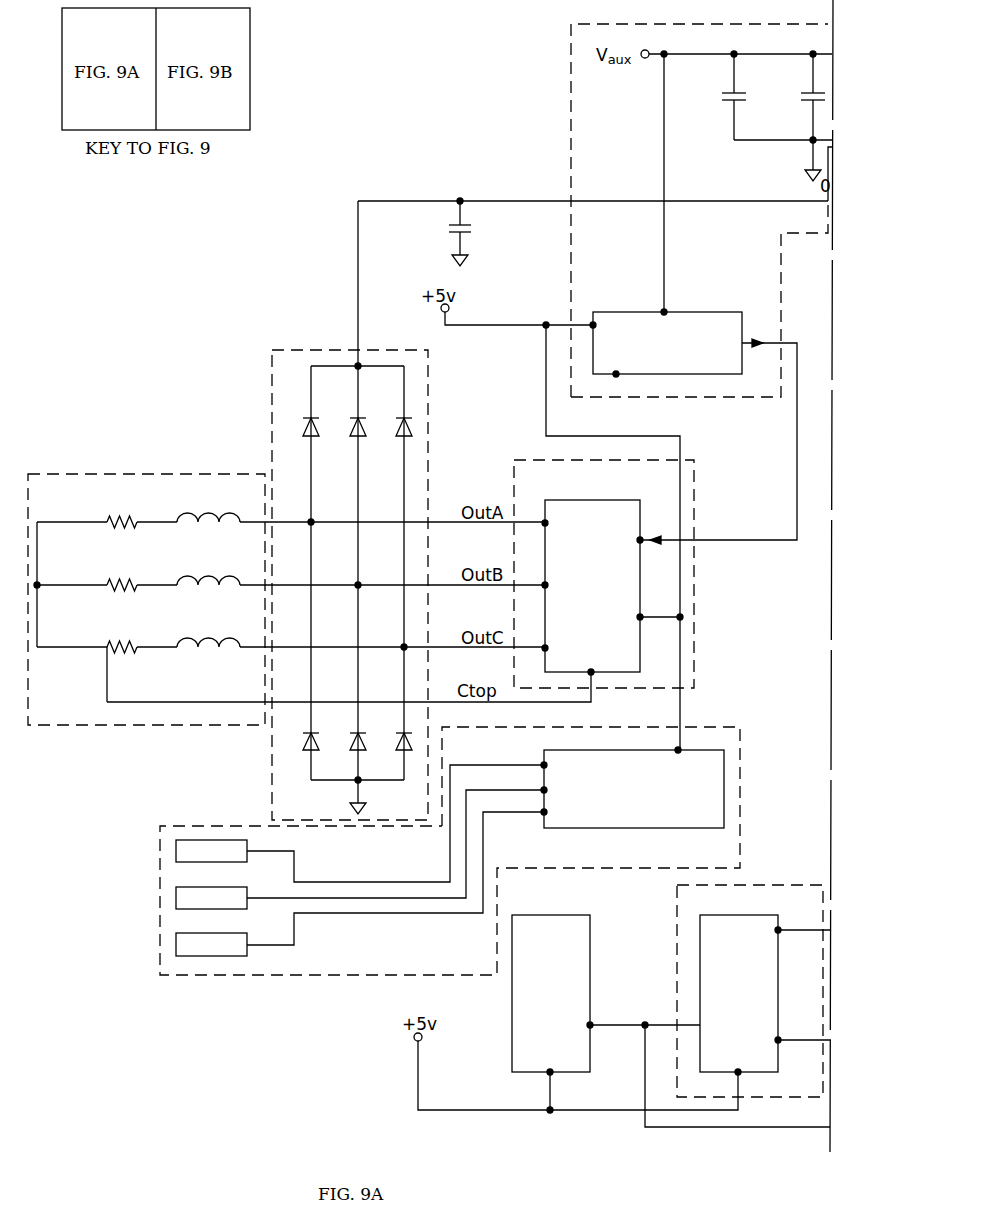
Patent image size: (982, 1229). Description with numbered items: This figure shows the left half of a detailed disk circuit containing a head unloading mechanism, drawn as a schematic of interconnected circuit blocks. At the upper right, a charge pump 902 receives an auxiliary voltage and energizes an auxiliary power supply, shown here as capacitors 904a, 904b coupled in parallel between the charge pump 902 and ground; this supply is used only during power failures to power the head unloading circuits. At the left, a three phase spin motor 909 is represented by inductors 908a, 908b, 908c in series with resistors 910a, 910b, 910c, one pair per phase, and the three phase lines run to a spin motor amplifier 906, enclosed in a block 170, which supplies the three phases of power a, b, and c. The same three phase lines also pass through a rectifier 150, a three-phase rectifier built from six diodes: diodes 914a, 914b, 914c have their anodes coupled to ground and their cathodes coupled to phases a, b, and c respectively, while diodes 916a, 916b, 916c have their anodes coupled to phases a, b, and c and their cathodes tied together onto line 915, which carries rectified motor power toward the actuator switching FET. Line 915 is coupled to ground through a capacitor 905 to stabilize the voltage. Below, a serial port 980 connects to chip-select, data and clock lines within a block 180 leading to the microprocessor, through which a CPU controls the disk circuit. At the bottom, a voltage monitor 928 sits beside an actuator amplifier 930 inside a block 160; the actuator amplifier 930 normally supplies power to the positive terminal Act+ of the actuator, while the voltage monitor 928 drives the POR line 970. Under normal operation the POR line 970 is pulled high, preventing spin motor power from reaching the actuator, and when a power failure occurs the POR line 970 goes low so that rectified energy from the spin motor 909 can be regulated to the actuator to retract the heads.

The rectifier 150 is at (282, 350).
The actuator amplifier block 160 is at (776, 885).
The spin motor amplifier block 170 is at (695, 492).
The microprocessor interface 180 is at (158, 852).
The charge pump 902 is at (708, 312).
The capacitor 904a is at (716, 97).
The capacitor 904b is at (795, 97).
The capacitor 905 is at (462, 240).
The spin motor amplifier 906 is at (620, 500).
The inductor 908a is at (341, 523).
The inductor 908b is at (341, 586).
The inductor 908c is at (341, 646).
The three phase spin motor 909 is at (165, 474).
The resistor 910a is at (98, 523).
The resistor 910b is at (98, 586).
The resistor 910c is at (108, 647).
The diode 914a is at (303, 745).
The diode 914b is at (340, 743).
The diode 914c is at (388, 743).
The line 915 is at (377, 201).
The diode 916a is at (303, 428).
The diode 916b is at (339, 429).
The diode 916c is at (387, 429).
The voltage monitor 928 is at (590, 932).
The actuator amplifier 930 is at (778, 978).
The POR line 970 is at (760, 1130).
The serial port 980 is at (640, 829).